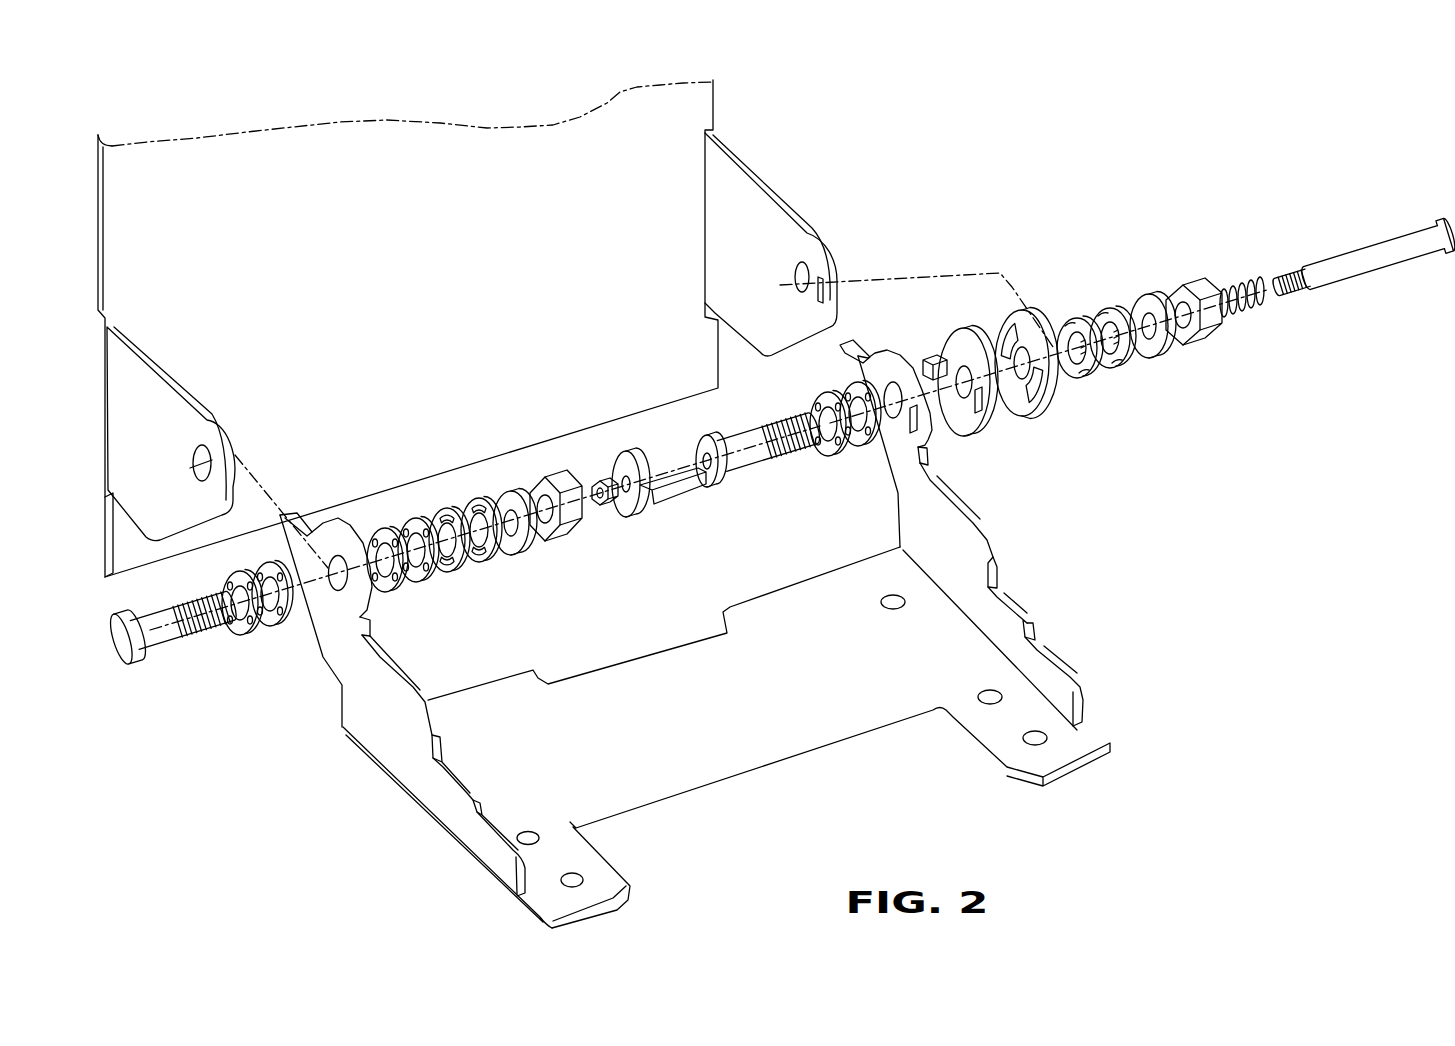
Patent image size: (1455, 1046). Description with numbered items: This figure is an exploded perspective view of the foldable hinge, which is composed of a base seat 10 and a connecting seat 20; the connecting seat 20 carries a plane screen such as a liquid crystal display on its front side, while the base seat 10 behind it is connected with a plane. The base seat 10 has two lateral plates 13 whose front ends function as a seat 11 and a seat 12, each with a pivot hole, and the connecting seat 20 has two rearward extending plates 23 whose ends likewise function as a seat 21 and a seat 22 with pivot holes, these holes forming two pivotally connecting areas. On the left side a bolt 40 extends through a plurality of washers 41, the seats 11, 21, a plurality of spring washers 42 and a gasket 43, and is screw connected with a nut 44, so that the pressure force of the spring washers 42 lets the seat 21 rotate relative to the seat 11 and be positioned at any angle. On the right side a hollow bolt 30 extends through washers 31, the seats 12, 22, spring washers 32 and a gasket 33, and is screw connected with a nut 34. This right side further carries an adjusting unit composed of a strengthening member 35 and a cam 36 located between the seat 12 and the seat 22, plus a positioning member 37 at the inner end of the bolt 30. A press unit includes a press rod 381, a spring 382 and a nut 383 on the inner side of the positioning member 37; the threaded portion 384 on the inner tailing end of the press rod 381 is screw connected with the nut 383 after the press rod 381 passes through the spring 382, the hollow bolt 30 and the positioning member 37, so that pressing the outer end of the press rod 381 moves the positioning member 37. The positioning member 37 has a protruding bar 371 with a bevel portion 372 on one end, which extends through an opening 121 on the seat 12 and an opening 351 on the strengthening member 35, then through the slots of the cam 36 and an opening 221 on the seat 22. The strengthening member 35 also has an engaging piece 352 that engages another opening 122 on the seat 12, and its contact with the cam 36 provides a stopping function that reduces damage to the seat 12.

The base seat 10 is at (820, 717).
The seat 11 is at (335, 638).
The seat 12 is at (908, 455).
The opening 121 is at (918, 425).
The opening 122 is at (863, 357).
The lateral plate 13 is at (977, 593).
The connecting seat 20 is at (694, 105).
The seat 21 is at (203, 452).
The seat 22 is at (803, 260).
The opening 221 is at (820, 303).
The rearward extending plate 23 is at (738, 190).
The bolt 30 is at (740, 473).
The washer 31 is at (870, 453).
The spring washer 32 is at (1095, 380).
The gasket 33 is at (1163, 368).
The nut 34 is at (1210, 345).
The strengthening member 35 is at (965, 328).
The opening 351 is at (983, 407).
The engaging piece 352 is at (933, 355).
The cam 36 is at (1032, 312).
The positioning member 37 is at (637, 517).
The protruding bar 371 is at (677, 503).
The bevel portion 372 is at (700, 493).
The press rod 381 is at (1353, 252).
The spring 382 is at (1237, 277).
The nut 383 is at (600, 481).
The threaded portion 384 is at (1287, 292).
The bolt 40 is at (153, 643).
The washer 41 is at (250, 633).
The spring washer 42 is at (458, 565).
The gasket 43 is at (510, 550).
The nut 44 is at (563, 530).